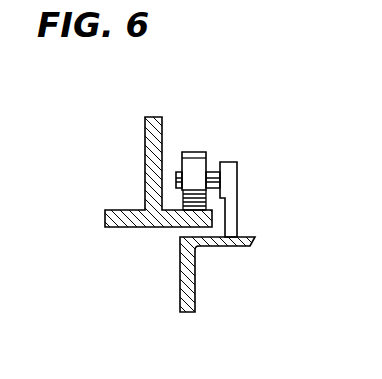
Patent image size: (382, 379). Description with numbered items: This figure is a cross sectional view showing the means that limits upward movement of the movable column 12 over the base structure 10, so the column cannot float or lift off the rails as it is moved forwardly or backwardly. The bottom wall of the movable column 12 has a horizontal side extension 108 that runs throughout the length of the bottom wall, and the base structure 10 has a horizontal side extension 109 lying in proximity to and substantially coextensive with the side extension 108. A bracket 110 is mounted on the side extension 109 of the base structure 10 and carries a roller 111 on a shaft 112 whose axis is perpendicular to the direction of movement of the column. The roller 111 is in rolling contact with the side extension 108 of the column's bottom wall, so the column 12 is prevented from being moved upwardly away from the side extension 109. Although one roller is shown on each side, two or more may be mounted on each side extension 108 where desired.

The base structure 10 is at (195, 300).
The movable column 12 is at (145, 132).
The horizontal side extension of the bottom wall of the movable column 108 is at (183, 224).
The horizontal side extension of the base structure 109 is at (226, 247).
The bracket 110 is at (238, 207).
The roller 111 is at (195, 152).
The shaft 112 is at (213, 171).